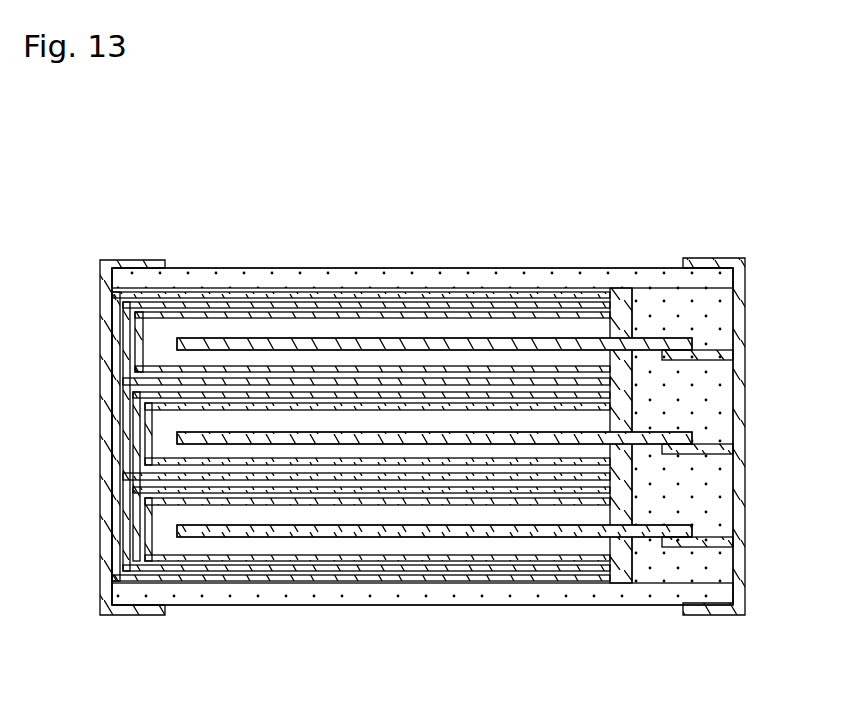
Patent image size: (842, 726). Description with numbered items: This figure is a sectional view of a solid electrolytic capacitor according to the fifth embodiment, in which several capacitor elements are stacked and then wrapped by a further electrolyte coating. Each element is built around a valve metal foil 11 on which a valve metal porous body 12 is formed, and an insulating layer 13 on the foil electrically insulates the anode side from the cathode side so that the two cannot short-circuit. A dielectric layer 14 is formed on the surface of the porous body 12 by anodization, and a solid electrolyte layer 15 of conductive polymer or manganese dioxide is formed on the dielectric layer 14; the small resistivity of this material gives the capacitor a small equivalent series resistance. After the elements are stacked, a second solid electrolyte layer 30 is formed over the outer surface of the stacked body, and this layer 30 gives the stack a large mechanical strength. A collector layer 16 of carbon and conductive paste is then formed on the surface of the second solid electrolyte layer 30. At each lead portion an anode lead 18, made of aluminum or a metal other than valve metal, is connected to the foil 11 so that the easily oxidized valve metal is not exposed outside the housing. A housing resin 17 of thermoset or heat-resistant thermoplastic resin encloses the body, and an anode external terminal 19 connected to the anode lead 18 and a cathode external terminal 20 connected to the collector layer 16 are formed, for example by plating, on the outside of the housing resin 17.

The valve metal foil 11 is at (201, 344).
The valve metal porous body 12 is at (284, 328).
The insulating layer 13 is at (622, 574).
The dielectric layer 14 is at (351, 312).
The solid electrolyte layer 15 is at (411, 306).
The collector layer 16 is at (476, 293).
The housing resin 17 is at (265, 593).
The anode lead 18 is at (692, 541).
The anode external terminal 19 is at (745, 573).
The cathode external terminal 20 is at (107, 568).
The second solid electrolyte layer 30 is at (554, 306).